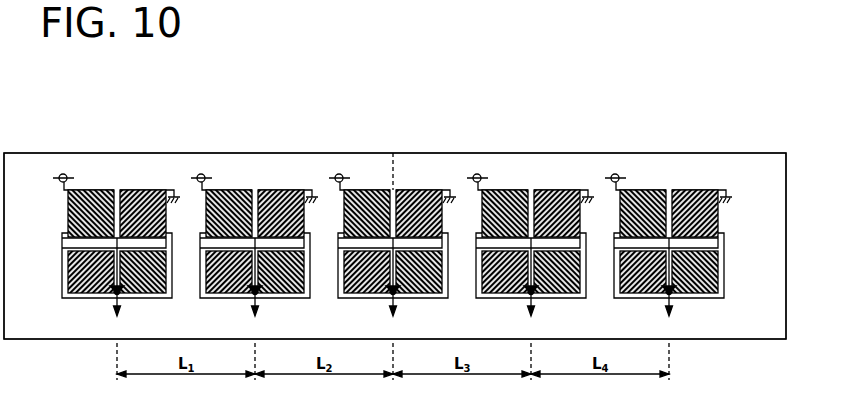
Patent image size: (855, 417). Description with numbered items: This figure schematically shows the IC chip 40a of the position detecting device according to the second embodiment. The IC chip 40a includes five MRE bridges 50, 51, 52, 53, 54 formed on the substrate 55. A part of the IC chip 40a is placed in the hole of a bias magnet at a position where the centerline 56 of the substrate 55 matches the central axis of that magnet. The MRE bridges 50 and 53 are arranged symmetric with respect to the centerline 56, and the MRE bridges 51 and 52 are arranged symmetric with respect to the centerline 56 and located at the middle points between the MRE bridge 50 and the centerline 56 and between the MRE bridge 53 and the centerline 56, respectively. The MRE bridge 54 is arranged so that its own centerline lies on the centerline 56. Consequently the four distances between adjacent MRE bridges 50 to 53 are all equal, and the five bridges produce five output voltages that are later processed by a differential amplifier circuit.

The MRE bridge 50 is at (118, 178).
The MRE bridge 51 is at (255, 178).
The MRE bridge 52 is at (531, 178).
The MRE bridge 53 is at (669, 178).
The MRE bridge 54 is at (407, 180).
The substrate 55 is at (752, 272).
The centerline 56 is at (392, 170).
The IC chip 40a is at (718, 142).